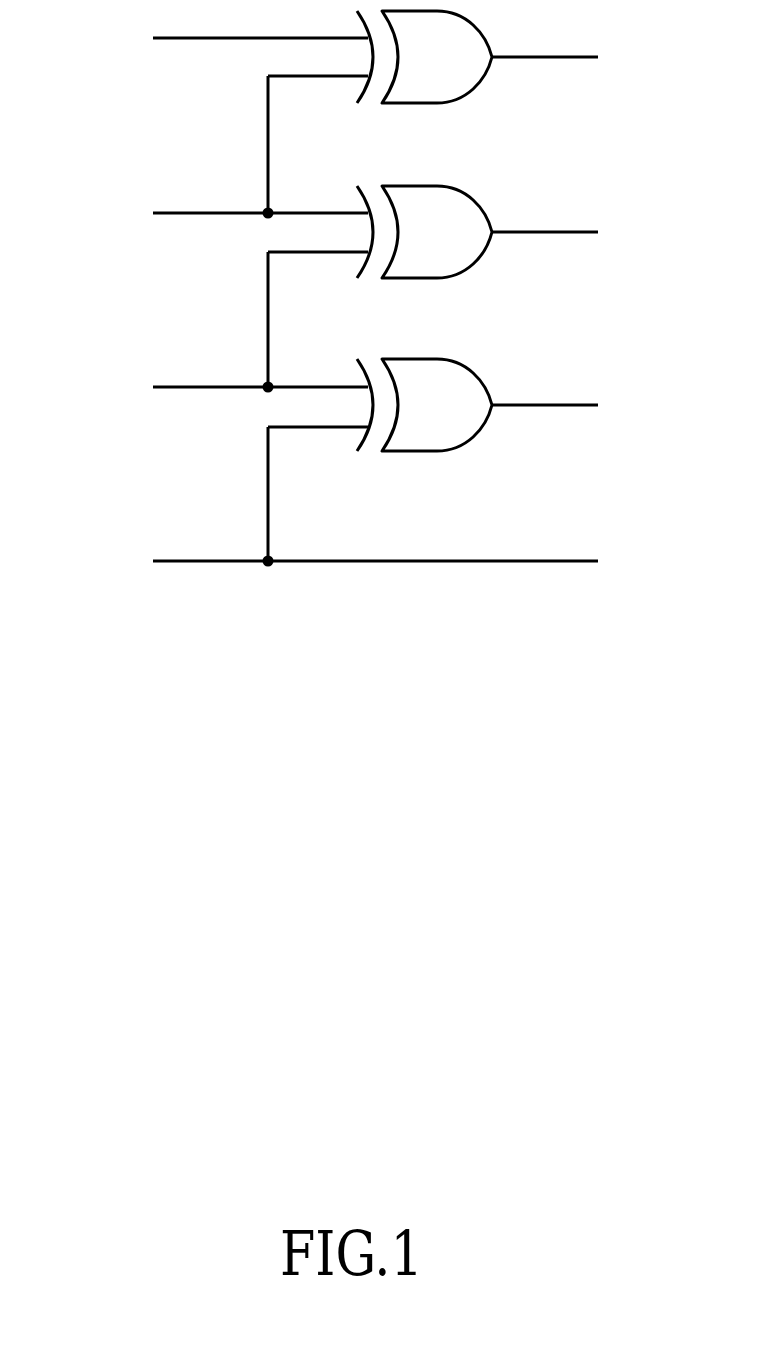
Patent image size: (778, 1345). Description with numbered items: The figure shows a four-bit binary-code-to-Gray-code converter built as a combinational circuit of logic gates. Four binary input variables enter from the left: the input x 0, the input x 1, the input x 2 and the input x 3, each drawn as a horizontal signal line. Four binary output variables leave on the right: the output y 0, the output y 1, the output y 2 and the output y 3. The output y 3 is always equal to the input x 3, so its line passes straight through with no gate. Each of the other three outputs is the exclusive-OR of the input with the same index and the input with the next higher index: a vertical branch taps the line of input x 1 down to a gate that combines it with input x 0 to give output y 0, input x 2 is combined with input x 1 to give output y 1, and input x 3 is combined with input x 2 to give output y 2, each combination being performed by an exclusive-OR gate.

The bit 0 signal path (input x0, XOR gate, output y0) 0 is at (367, 57).
The bit 1 signal path (input x1, XOR gate, output y1) 1 is at (367, 232).
The bit 2 signal path (input x2, XOR gate, output y2) 2 is at (367, 405).
The bit 3 signal path (input x3, output y3) 3 is at (367, 556).